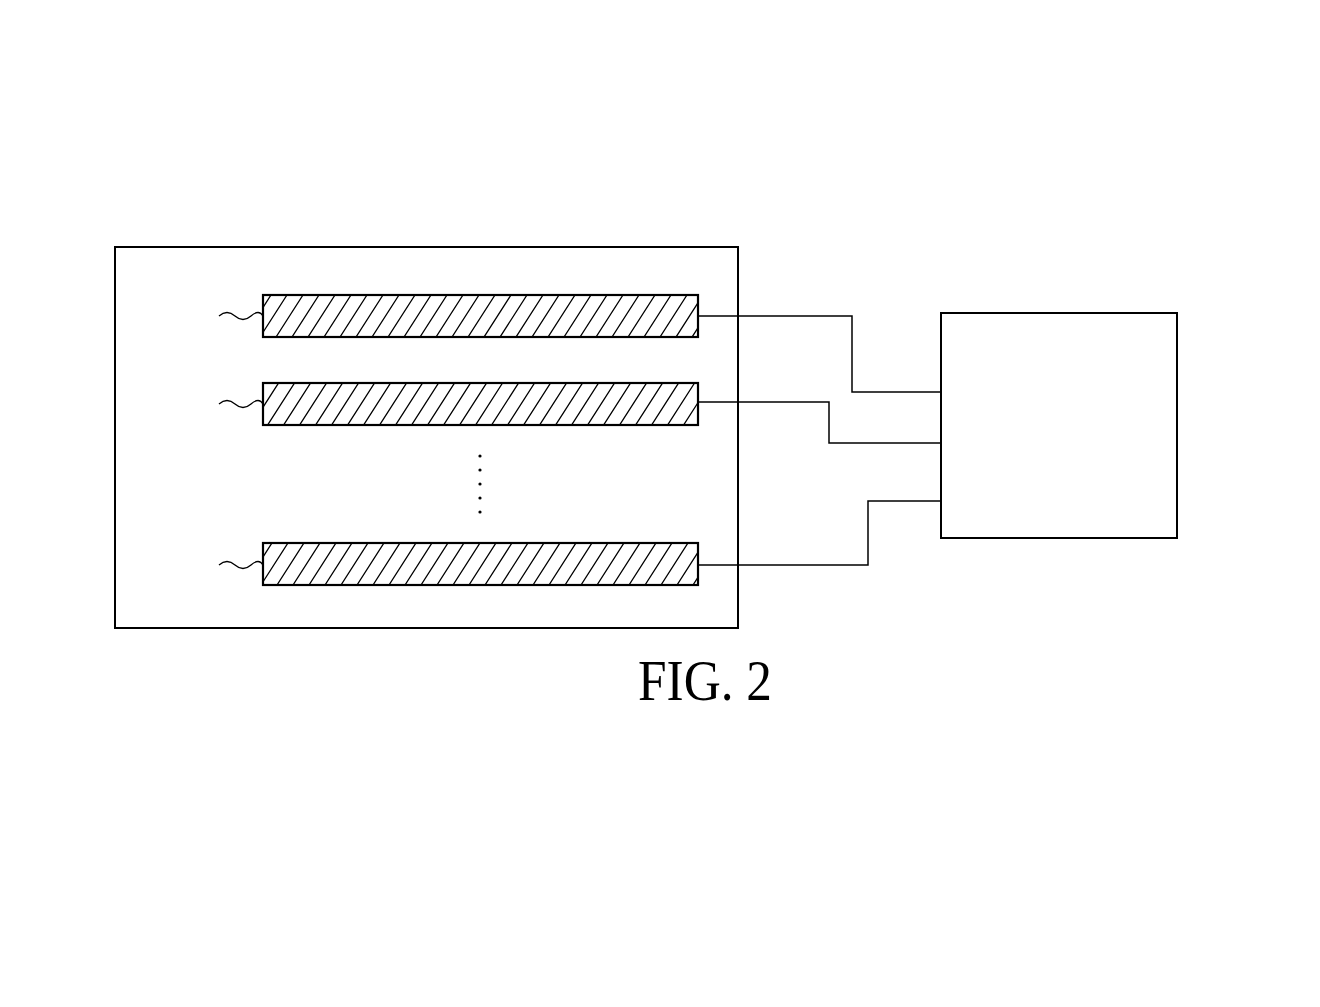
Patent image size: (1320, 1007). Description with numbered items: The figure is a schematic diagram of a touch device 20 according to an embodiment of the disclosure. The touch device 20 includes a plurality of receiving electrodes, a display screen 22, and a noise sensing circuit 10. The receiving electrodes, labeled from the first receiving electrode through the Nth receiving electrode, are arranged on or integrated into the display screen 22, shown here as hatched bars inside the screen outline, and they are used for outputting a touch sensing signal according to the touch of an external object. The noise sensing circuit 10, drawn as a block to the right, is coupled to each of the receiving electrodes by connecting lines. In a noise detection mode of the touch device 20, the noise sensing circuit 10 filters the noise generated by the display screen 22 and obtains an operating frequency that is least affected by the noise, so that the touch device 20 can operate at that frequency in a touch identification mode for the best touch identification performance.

The touch device 20 is at (1170, 86).
The display screen 22 is at (707, 241).
The noise sensing circuit 10 is at (1138, 312).